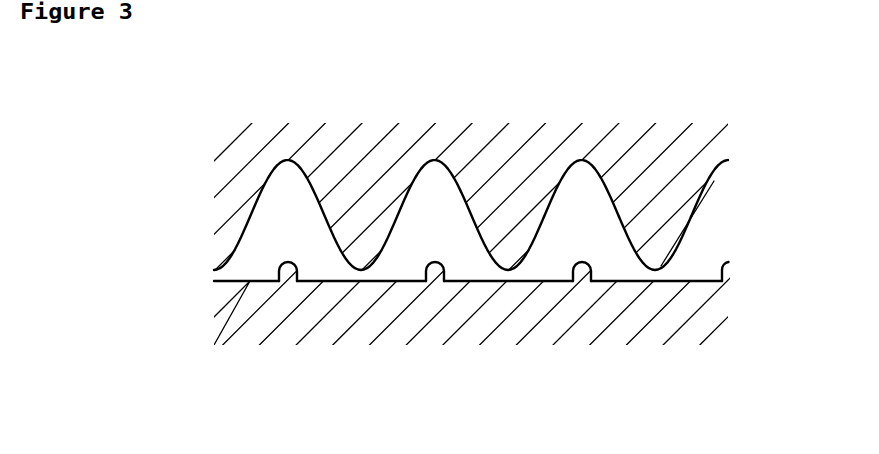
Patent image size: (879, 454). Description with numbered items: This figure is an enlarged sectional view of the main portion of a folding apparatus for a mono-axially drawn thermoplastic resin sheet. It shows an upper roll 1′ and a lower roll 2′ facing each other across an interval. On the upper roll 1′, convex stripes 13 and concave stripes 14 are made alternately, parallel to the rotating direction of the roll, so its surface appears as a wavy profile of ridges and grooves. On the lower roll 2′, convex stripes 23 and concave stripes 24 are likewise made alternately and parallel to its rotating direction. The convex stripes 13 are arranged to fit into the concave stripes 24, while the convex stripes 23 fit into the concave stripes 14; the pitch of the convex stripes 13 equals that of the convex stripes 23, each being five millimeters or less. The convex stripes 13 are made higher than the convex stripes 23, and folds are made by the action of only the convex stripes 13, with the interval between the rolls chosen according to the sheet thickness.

The upper roll 1′ is at (502, 115).
The concave stripes 14 is at (585, 160).
The convex stripes 13 is at (677, 248).
The lower roll 2′ is at (548, 355).
The convex stripes 23 is at (435, 266).
The concave stripes 24 is at (665, 282).